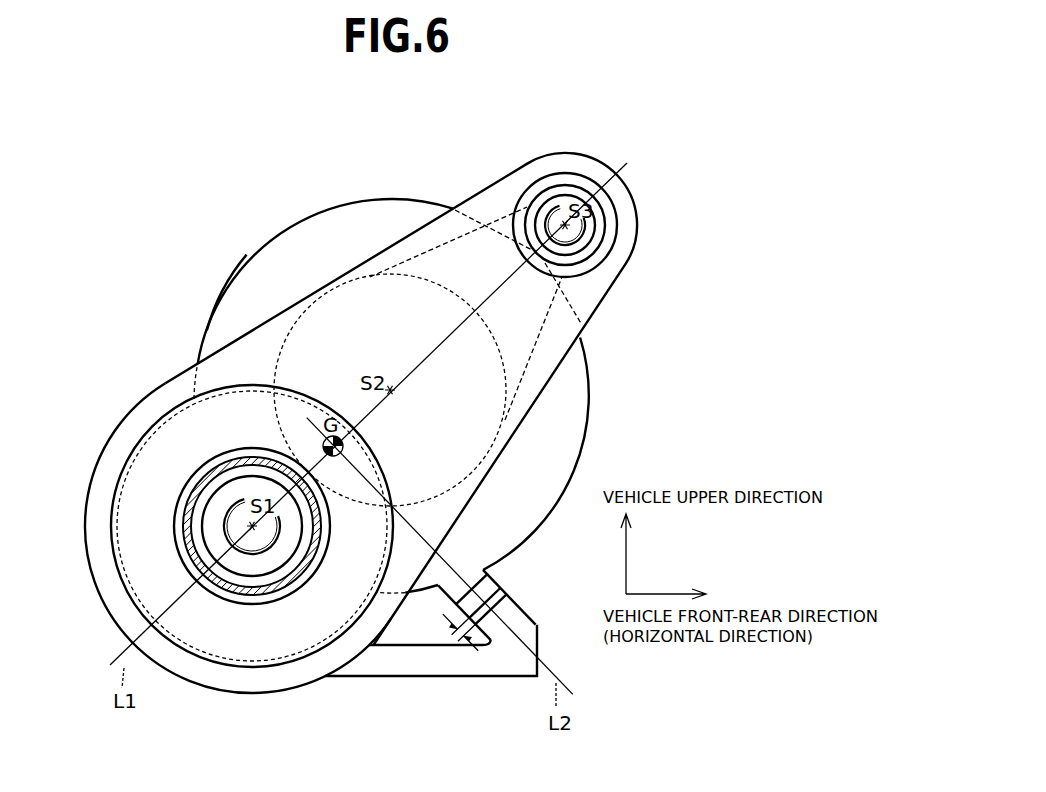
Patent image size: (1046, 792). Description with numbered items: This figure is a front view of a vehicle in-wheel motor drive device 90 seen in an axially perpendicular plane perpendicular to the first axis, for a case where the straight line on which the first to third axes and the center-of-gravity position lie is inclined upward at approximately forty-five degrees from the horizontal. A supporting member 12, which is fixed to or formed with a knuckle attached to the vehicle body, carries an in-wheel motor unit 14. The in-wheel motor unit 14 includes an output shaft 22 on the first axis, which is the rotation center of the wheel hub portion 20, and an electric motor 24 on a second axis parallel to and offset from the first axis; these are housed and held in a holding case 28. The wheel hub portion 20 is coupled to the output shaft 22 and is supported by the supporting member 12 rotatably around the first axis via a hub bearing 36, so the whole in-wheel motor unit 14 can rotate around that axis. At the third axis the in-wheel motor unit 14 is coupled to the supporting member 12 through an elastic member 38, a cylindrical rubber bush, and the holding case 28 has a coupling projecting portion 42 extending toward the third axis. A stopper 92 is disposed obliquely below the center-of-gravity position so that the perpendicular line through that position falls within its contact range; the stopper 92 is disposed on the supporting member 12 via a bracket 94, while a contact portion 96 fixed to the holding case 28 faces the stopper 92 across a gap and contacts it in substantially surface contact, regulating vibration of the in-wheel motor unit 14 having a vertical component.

The vehicle in-wheel motor drive device 90 is at (163, 178).
The supporting member 12 is at (433, 240).
The in-wheel motor unit 14 is at (166, 350).
The wheel hub portion 20 is at (200, 485).
The output shaft 22 is at (243, 526).
The electric motor 24 is at (308, 201).
The holding case 28 is at (247, 288).
The hub bearing 36 is at (238, 668).
The elastic member 38 is at (573, 173).
The coupling projecting portion 42 is at (547, 298).
The stopper 92 is at (512, 601).
The bracket 94 is at (415, 660).
The contact portion 96 is at (488, 578).